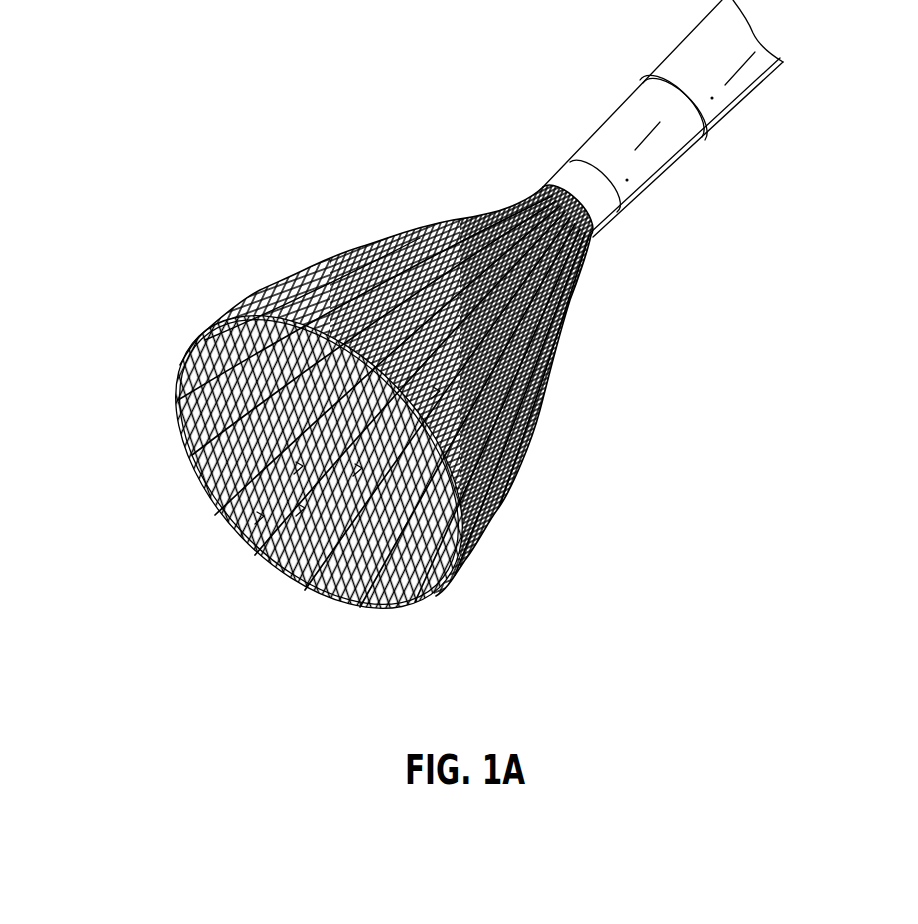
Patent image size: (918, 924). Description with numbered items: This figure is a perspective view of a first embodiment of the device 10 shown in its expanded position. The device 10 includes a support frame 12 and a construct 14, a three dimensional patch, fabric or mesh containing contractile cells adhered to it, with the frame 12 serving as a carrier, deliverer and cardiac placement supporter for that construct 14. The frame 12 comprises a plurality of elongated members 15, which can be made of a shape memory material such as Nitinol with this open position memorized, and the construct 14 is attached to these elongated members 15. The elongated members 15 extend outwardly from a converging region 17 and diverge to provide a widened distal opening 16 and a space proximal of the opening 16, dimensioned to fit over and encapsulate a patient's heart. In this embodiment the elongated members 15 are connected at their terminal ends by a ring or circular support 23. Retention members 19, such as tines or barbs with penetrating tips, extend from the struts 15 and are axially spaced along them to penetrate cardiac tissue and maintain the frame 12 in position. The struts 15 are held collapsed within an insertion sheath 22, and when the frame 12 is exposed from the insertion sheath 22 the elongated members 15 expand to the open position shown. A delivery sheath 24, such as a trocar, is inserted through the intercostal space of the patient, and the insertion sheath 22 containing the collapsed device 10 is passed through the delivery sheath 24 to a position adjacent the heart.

The device 10 is at (600, 508).
The support frame 12 is at (361, 406).
The construct 14 is at (490, 530).
The elongated members 15 is at (413, 590).
The distal opening 16 is at (260, 570).
The converging region 17 is at (489, 200).
The retention members 19 is at (257, 440).
The insertion sheath 22 is at (645, 183).
The circular support 23 is at (197, 483).
The delivery sheath 24 is at (737, 97).